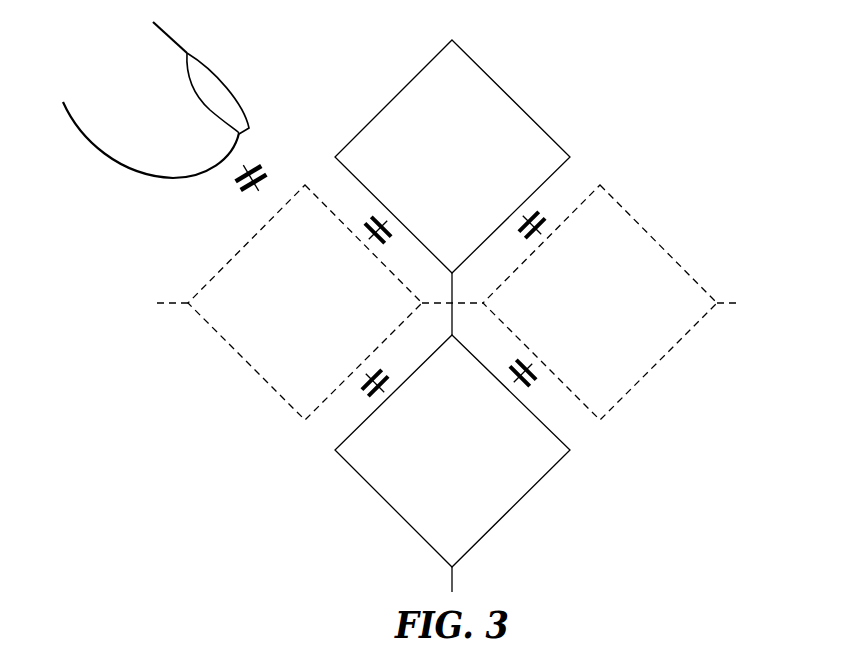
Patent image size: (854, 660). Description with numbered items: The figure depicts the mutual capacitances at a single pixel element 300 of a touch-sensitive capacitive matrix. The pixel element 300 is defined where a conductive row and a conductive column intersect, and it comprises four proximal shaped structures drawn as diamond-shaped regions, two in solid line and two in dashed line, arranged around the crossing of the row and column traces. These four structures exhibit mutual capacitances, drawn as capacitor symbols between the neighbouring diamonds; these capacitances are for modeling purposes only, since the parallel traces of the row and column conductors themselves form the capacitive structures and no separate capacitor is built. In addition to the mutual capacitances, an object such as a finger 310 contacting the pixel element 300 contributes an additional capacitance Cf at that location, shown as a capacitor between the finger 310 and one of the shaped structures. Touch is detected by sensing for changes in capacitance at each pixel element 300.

The pixel element 300 is at (644, 132).
The finger 310 is at (125, 148).
The additional capacitance Cf is at (244, 192).